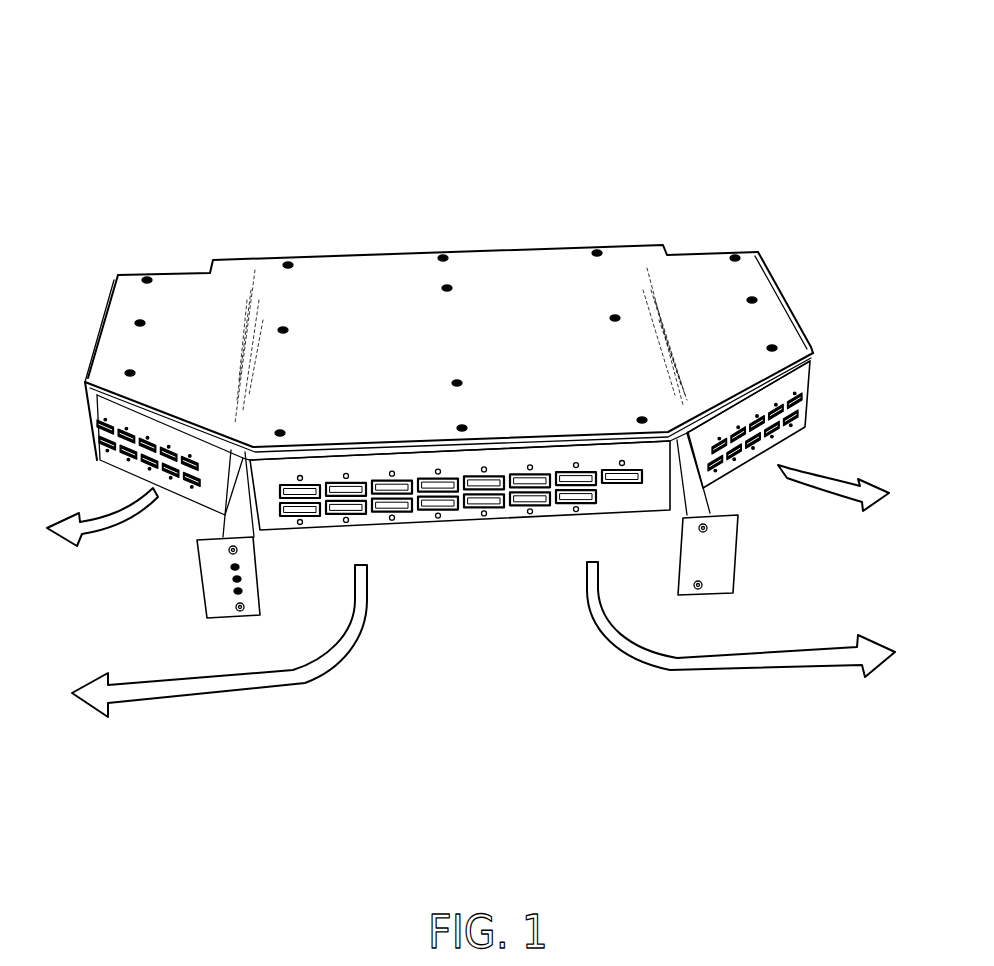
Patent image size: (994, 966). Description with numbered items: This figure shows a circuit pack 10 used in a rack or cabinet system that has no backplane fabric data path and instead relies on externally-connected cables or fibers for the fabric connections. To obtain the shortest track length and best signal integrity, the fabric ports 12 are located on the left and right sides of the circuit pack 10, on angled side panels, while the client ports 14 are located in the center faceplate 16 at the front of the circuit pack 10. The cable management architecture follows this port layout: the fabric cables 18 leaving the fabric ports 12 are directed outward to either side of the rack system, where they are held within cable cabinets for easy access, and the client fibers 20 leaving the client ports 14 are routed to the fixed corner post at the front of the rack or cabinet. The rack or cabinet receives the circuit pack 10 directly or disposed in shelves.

The circuit pack 10 is at (610, 106).
The fabric ports 12 is at (160, 530).
The client ports 14 is at (310, 566).
The center faceplate 16 is at (466, 565).
The fabric cables 18 is at (805, 522).
The client fibers 20 is at (792, 698).